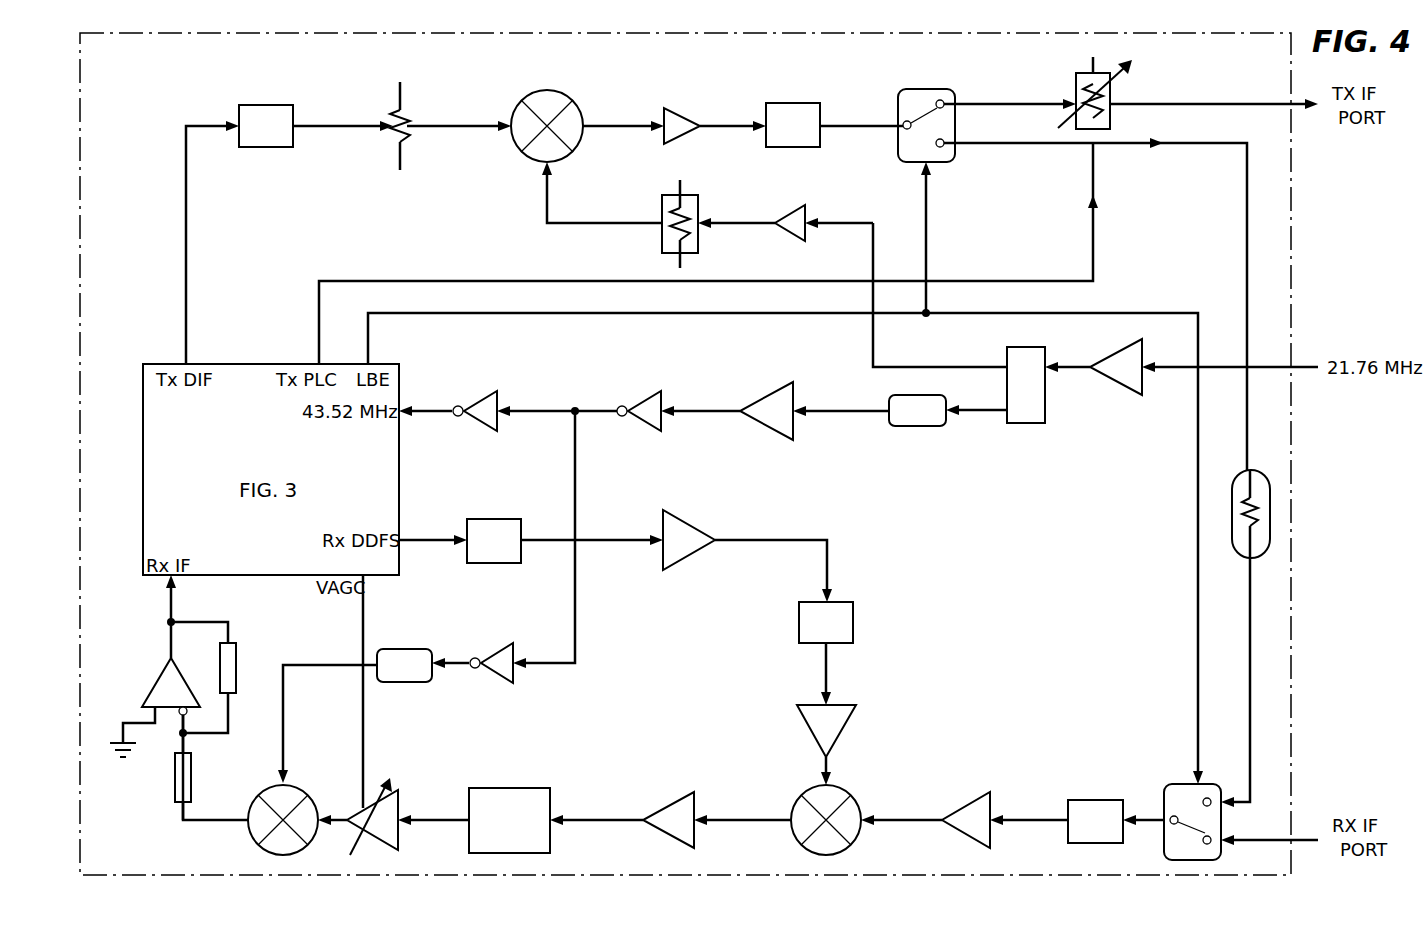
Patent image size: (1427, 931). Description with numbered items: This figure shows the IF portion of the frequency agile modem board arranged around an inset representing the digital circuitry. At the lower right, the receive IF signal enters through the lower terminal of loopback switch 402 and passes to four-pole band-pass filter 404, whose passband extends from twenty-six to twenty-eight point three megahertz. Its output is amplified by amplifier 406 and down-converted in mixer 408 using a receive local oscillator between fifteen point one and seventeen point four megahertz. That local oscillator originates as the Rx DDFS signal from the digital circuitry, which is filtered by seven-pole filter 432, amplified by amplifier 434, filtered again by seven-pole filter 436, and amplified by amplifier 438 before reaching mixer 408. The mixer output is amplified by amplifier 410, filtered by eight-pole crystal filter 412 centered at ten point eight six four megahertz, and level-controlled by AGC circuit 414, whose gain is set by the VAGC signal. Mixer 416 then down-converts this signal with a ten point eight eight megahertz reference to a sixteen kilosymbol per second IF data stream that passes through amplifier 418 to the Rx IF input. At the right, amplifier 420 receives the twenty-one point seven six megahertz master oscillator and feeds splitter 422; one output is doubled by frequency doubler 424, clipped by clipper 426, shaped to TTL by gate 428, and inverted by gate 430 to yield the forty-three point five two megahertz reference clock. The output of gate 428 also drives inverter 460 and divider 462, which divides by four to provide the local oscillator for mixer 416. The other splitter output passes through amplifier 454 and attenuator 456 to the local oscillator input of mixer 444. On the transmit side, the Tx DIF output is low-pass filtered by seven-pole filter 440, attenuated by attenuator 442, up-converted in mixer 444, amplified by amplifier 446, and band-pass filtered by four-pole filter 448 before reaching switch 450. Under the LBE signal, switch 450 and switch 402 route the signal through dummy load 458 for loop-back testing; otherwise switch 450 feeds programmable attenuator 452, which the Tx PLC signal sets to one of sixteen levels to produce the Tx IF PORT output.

The loopback switch 402 is at (1168, 784).
The 4-pole band-pass filter 404 is at (1092, 800).
The amplifier 406 is at (968, 808).
The mixer 408 is at (808, 790).
The amplifier 410 is at (676, 792).
The 8-pole crystal filter 412 is at (530, 788).
The AGC circuit 414 is at (398, 800).
The mixer 416 is at (258, 792).
The amplifier 418 is at (152, 674).
The amplifier 420 is at (1120, 388).
The splitter 422 is at (1028, 423).
The frequency doubler 424 is at (928, 426).
The clipper 426 is at (758, 420).
The gate 428 is at (640, 420).
The gate 430 is at (482, 398).
The 7-pole filter 432 is at (494, 519).
The amplifier 434 is at (686, 526).
The 7-pole filter 436 is at (853, 618).
The amplifier 438 is at (844, 740).
The 7-pole filter 440 is at (266, 105).
The attenuator 442 is at (408, 118).
The mixer 444 is at (570, 94).
The amplifier 446 is at (690, 110).
The 4-pole bandpass filter 448 is at (800, 103).
The switch 450 is at (955, 92).
The programmable attenuator 452 is at (1076, 90).
The amplifier 454 is at (792, 206).
The attenuator 456 is at (662, 208).
The dummy load 458 is at (1236, 558).
The inverter 460 is at (488, 646).
The divider 462 is at (416, 649).